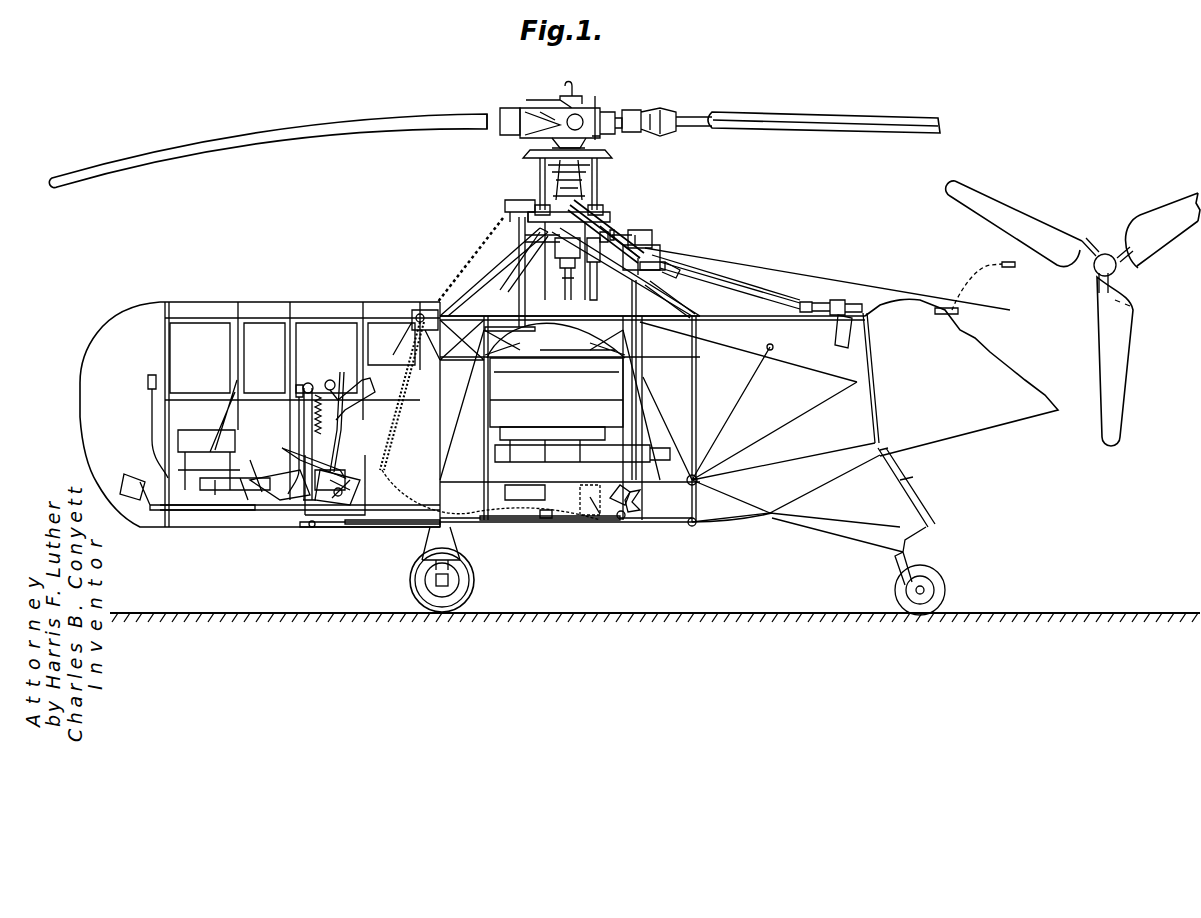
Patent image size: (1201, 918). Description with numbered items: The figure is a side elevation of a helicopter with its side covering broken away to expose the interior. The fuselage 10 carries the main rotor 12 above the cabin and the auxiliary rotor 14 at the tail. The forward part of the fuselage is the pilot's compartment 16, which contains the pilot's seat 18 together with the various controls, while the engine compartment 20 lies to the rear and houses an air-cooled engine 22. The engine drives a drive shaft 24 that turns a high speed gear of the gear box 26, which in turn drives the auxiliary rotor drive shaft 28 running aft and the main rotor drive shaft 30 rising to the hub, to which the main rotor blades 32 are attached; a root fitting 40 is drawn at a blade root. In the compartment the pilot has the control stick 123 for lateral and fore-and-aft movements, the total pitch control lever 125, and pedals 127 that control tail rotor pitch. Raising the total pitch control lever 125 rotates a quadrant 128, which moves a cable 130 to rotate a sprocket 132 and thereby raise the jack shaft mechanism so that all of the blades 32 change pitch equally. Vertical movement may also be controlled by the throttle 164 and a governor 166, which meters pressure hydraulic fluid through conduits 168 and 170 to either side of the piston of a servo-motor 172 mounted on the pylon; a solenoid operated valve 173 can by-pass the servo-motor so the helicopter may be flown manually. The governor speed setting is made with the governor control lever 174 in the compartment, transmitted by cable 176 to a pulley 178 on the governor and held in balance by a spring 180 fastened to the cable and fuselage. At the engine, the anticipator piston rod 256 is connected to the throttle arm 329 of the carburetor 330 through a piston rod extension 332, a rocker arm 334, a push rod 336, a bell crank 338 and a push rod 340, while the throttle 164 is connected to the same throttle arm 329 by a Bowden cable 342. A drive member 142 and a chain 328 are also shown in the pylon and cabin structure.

The fuselage 10 is at (537, 577).
The main rotor 12 is at (534, 82).
The auxiliary rotor 14 is at (1098, 216).
The pilot's compartment 16 is at (260, 291).
The pilot's seat 18 is at (330, 388).
The engine compartment 20 is at (526, 501).
The air-cooled engine 22 is at (580, 431).
The drive shaft 24 is at (565, 318).
The gear box 26 is at (570, 255).
The auxiliary rotor drive shaft 28 is at (757, 290).
The main rotor drive shaft 30 is at (595, 140).
The main rotor blades 32 is at (248, 132).
The blade root fitting 40 is at (630, 118).
The control stick 123 is at (150, 375).
The total pitch control lever 125 is at (282, 450).
The pedals 127 is at (122, 478).
The quadrant 128 is at (320, 530).
The cable 130 is at (362, 486).
The sprocket 132 is at (548, 320).
The bracket 142 is at (530, 322).
The throttle 164 is at (340, 368).
The governor 166 is at (638, 245).
The conduit 168 is at (618, 232).
The conduit 170 is at (600, 238).
The servo-motor 172 is at (514, 199).
The solenoid operated valve 173 is at (588, 274).
The governor control lever 174 is at (308, 392).
The cable 176 is at (360, 528).
The pulley 178 is at (630, 242).
The spring 180 is at (315, 410).
The anticipator piston rod 256 is at (648, 252).
The drive chain 328 is at (530, 240).
The throttle arm 329 is at (588, 520).
The carburetor 330 is at (580, 488).
The piston rod extension 332 is at (662, 270).
The rocker arm 334 is at (638, 282).
The push rod 336 is at (658, 296).
The bell crank 338 is at (640, 510).
The push rod 340 is at (628, 518).
The Bowden cable 342 is at (386, 466).